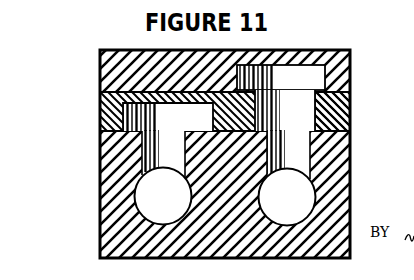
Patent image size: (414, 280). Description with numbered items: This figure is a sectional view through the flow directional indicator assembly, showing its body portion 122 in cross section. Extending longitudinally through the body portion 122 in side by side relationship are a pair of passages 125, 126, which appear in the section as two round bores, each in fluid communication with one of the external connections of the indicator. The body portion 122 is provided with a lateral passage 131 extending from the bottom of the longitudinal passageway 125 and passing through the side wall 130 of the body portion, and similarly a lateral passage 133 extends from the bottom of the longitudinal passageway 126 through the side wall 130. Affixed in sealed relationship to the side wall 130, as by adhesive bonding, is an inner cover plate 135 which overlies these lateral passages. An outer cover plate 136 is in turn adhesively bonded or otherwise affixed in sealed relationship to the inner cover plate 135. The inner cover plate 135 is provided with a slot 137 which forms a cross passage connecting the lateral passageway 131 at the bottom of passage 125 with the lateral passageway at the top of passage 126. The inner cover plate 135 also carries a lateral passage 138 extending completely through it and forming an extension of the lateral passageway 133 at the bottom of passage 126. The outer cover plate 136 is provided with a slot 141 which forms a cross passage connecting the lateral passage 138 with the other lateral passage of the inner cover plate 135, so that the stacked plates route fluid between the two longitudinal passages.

The outer cover plate 136 is at (352, 51).
The slot 141 is at (320, 77).
The lateral passage 138 is at (308, 108).
The inner cover plate 135 is at (345, 123).
The slot 137 is at (104, 111).
The side wall 130 is at (104, 129).
The lateral passage 131 is at (158, 153).
The lateral passage 133 is at (302, 160).
The passage 125 is at (152, 198).
The body portion 122 is at (348, 191).
The passage 126 is at (302, 206).